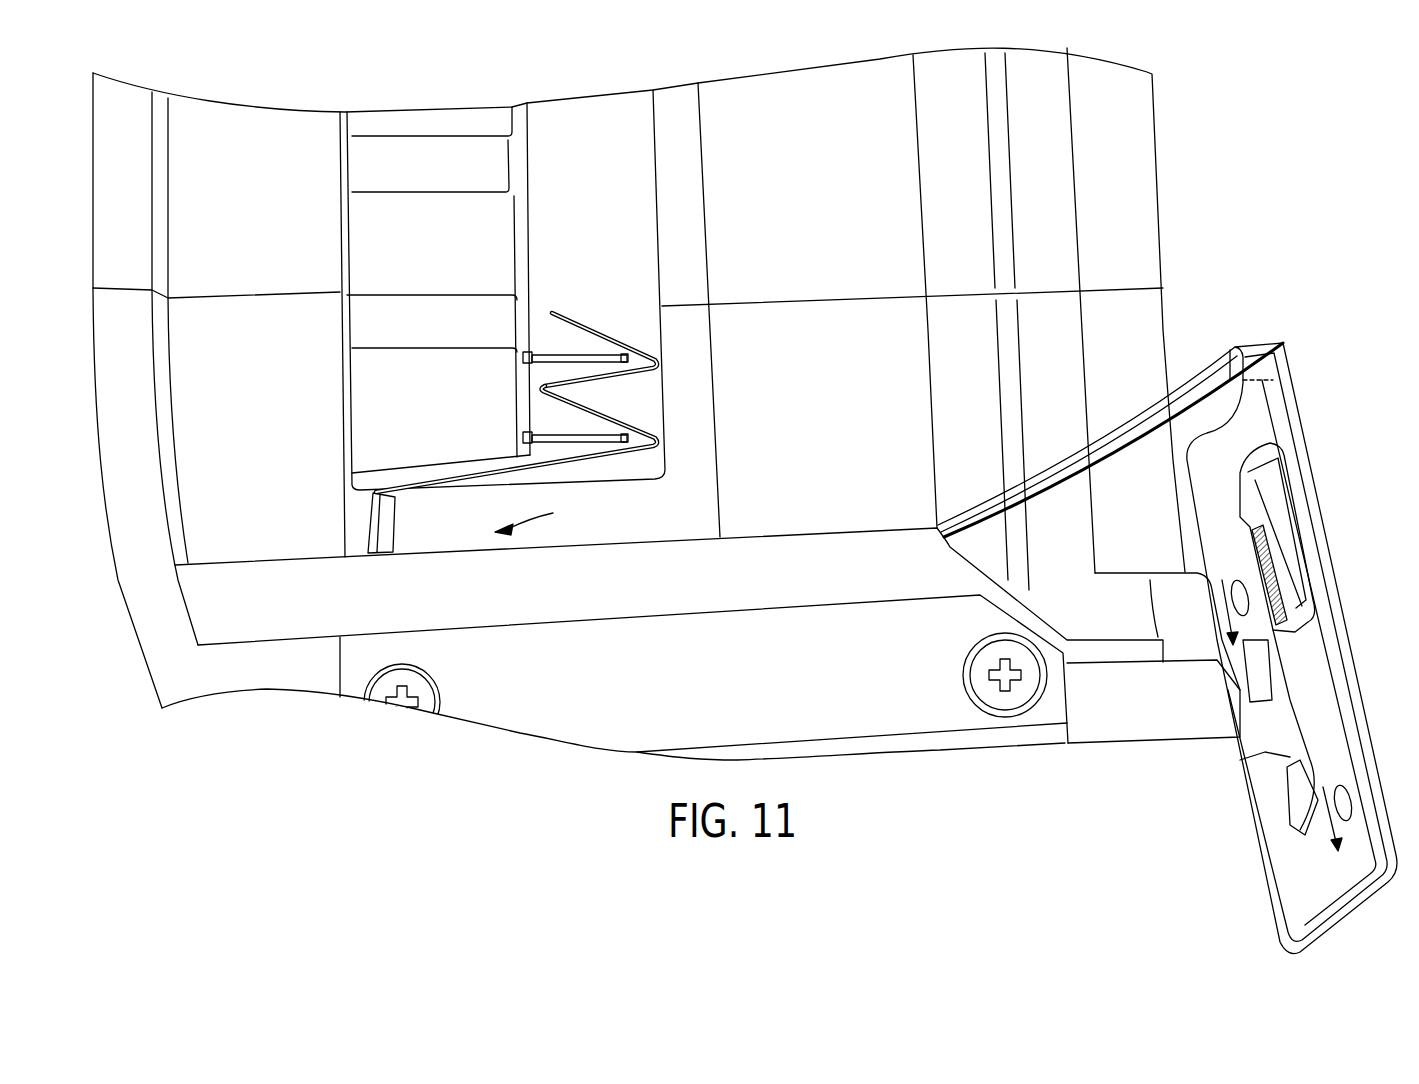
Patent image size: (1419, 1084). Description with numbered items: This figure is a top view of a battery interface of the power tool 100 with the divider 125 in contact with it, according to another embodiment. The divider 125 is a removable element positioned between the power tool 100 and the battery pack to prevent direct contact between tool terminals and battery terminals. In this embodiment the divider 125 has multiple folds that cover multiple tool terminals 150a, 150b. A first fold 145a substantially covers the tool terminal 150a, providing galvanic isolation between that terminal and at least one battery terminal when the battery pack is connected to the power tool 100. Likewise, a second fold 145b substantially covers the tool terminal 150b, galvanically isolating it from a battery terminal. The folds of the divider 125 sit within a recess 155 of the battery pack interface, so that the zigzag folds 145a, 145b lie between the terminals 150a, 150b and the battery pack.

The power tool 100 is at (840, 738).
The divider 125 is at (1343, 613).
The first fold 145a is at (660, 440).
The second fold 145b is at (660, 360).
The tool terminal 150a is at (537, 438).
The tool terminal 150b is at (537, 352).
The recess 155 is at (541, 519).